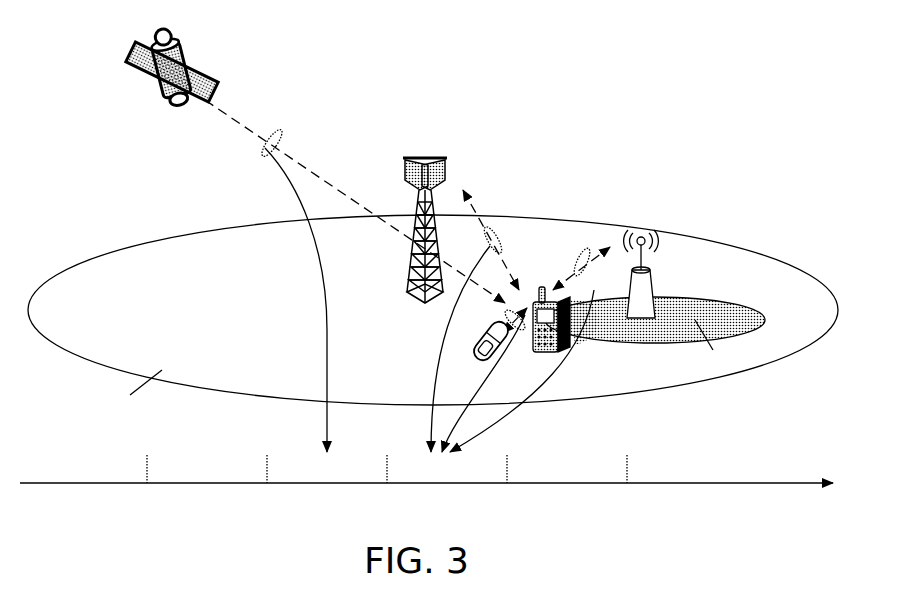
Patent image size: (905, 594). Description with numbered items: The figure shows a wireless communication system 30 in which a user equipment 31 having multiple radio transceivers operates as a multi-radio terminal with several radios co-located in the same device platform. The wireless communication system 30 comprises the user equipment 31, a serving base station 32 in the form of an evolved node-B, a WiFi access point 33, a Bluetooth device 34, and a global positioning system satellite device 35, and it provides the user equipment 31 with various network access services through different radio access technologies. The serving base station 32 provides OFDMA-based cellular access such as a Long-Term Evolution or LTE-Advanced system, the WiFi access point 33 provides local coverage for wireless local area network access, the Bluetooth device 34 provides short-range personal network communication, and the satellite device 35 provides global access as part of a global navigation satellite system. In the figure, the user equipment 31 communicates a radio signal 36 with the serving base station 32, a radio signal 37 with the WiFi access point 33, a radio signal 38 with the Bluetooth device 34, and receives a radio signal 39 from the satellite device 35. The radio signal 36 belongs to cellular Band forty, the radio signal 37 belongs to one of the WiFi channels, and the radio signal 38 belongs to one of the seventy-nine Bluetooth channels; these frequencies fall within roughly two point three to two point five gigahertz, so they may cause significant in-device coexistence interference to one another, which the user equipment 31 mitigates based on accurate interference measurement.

The wireless communication system 30 is at (429, 272).
The user equipment 31 is at (545, 353).
The serving base station 32 is at (425, 156).
The WiFi access point 33 is at (641, 237).
The Bluetooth device 34 is at (480, 348).
The global positioning system satellite device 35 is at (172, 108).
The radio signal 36 is at (501, 233).
The radio signal 37 is at (580, 256).
The radio signal 38 is at (502, 313).
The radio signal 39 is at (274, 127).